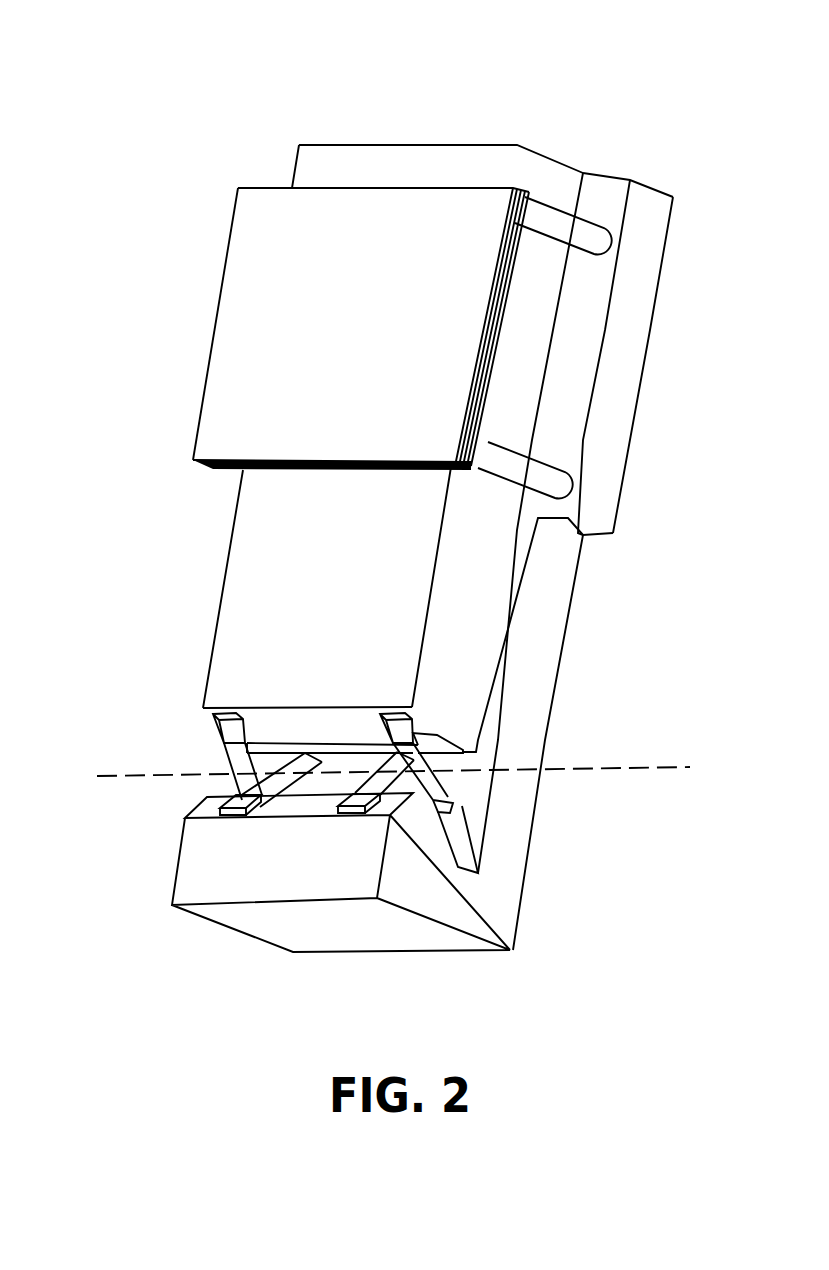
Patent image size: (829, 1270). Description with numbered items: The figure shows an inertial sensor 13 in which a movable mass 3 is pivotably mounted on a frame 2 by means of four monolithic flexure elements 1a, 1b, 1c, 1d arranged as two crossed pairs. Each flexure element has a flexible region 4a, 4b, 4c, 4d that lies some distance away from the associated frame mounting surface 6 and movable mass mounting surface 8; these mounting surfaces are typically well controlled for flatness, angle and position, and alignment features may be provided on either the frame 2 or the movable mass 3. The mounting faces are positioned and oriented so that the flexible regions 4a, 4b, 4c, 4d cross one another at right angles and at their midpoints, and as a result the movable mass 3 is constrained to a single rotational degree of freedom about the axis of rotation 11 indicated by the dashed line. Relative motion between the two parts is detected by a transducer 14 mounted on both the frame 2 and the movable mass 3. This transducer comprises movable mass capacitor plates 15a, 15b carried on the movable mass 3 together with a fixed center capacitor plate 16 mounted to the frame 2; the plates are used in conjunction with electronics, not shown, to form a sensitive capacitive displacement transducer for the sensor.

The monolithic flexure element 1a is at (457, 763).
The monolithic flexure element 1b is at (395, 816).
The monolithic flexure element 1c is at (212, 803).
The monolithic flexure element 1d is at (193, 732).
The frame 2 is at (632, 445).
The movable mass 3 is at (510, 580).
The flexible region 4a is at (437, 788).
The flexible region 4b is at (382, 808).
The flexible region 4c is at (281, 785).
The flexible region 4d is at (227, 762).
The frame mounting surface 6 is at (278, 778).
The movable mass mounting surface 8 is at (268, 707).
The axis of rotation 11 is at (573, 767).
The inertial sensor 13 is at (614, 648).
The transducer 14 is at (199, 302).
The movable mass capacitor plate 15a is at (202, 405).
The movable mass capacitor plate 15b is at (507, 322).
The fixed center capacitor plate 16 is at (521, 192).